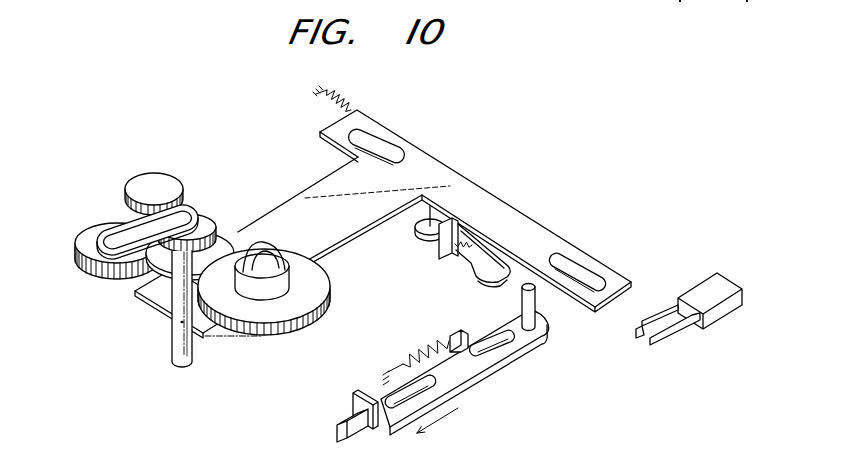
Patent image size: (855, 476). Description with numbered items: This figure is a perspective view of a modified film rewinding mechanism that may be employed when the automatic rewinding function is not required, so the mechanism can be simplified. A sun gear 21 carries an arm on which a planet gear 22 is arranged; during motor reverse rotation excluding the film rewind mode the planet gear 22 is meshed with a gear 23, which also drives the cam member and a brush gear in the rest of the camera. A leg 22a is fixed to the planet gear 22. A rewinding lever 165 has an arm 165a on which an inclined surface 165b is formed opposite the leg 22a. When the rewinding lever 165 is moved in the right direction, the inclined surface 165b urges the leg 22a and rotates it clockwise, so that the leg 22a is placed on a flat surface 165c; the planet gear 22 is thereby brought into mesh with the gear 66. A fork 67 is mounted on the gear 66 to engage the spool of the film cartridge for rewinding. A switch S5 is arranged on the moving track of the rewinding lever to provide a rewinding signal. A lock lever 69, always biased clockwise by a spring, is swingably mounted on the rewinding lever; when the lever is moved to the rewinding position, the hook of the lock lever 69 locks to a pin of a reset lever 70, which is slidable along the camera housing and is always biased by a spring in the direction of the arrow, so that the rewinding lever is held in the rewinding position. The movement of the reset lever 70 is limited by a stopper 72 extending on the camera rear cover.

The sun gear 21 is at (91, 233).
The planet gear 22 is at (198, 218).
The leg 22a is at (186, 358).
The gear 23 is at (162, 178).
The gear 66 is at (278, 318).
The fork 67 is at (291, 264).
The lock lever 69 is at (462, 261).
The reset lever 70 is at (478, 377).
The stopper 72 is at (350, 420).
The rewinding lever 165 is at (488, 184).
The arm 165a is at (295, 200).
The inclined surface 165b is at (172, 330).
The flat surface 165c is at (136, 293).
The switch S5 is at (689, 288).